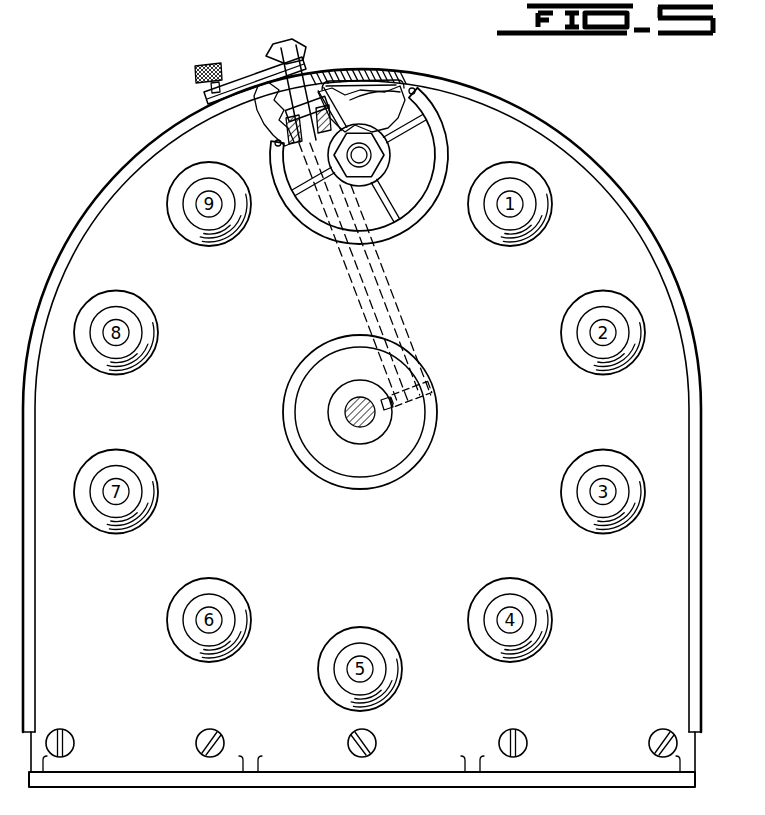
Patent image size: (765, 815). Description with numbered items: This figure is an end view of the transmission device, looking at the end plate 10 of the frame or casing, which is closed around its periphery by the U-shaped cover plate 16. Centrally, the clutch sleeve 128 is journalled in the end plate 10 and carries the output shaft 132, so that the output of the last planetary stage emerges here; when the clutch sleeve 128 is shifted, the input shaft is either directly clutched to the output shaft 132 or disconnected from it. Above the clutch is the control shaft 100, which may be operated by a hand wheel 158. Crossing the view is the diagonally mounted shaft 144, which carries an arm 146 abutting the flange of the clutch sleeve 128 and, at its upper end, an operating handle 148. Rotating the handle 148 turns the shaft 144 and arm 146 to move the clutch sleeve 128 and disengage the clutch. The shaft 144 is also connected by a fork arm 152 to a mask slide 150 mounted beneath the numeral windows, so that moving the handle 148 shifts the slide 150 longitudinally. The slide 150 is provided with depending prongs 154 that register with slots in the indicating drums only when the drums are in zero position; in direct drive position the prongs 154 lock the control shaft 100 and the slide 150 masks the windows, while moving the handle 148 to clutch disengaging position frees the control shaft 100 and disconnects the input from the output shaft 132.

The end plate 10 is at (518, 391).
The U-shaped cover plate 16 is at (602, 175).
The control shaft 100 is at (360, 152).
The clutch sleeve 128 is at (338, 420).
The output shaft 132 is at (360, 422).
The diagonally mounted shaft 144 is at (394, 319).
The arm 146 is at (396, 410).
The operating handle 148 is at (238, 88).
The mask slide 150 is at (377, 73).
The fork arm 152 is at (328, 112).
The depending prongs 154 is at (337, 78).
The hand wheel 158 is at (444, 140).